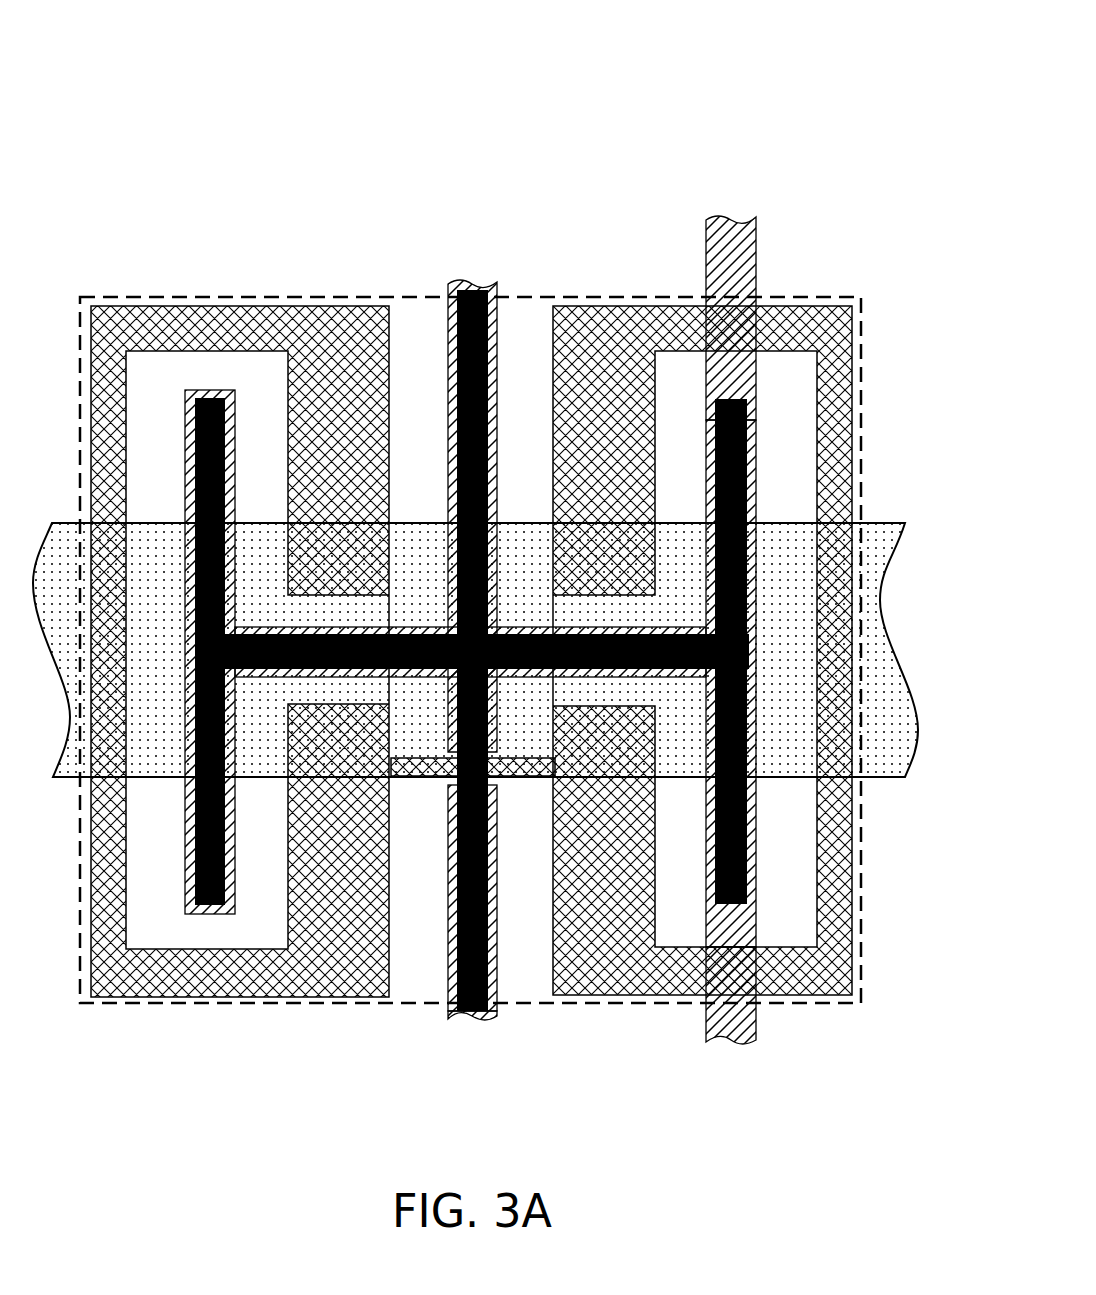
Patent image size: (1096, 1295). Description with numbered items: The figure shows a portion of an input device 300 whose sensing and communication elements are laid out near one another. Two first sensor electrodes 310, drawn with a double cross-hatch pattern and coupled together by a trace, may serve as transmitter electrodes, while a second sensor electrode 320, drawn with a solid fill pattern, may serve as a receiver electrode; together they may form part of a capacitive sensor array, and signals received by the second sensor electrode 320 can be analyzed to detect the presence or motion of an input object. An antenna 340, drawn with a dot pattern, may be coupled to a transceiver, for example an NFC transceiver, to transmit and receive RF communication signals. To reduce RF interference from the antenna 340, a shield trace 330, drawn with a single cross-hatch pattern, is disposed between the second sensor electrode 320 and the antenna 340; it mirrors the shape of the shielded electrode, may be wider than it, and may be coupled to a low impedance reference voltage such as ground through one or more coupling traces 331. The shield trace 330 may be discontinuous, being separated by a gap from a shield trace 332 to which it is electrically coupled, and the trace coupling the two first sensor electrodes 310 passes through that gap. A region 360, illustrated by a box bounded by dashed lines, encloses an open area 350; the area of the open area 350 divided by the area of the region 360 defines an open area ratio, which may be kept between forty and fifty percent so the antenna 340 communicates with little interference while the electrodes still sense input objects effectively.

The input device 300 is at (741, 74).
The first sensor electrodes 310 is at (638, 306).
The second sensor electrode 320 is at (494, 988).
The shield trace 330 is at (757, 1031).
The coupling trace 331 is at (757, 248).
The shield trace 332 is at (469, 1018).
The antenna 340 is at (882, 583).
The open area 350 is at (525, 349).
The region 360 is at (162, 296).